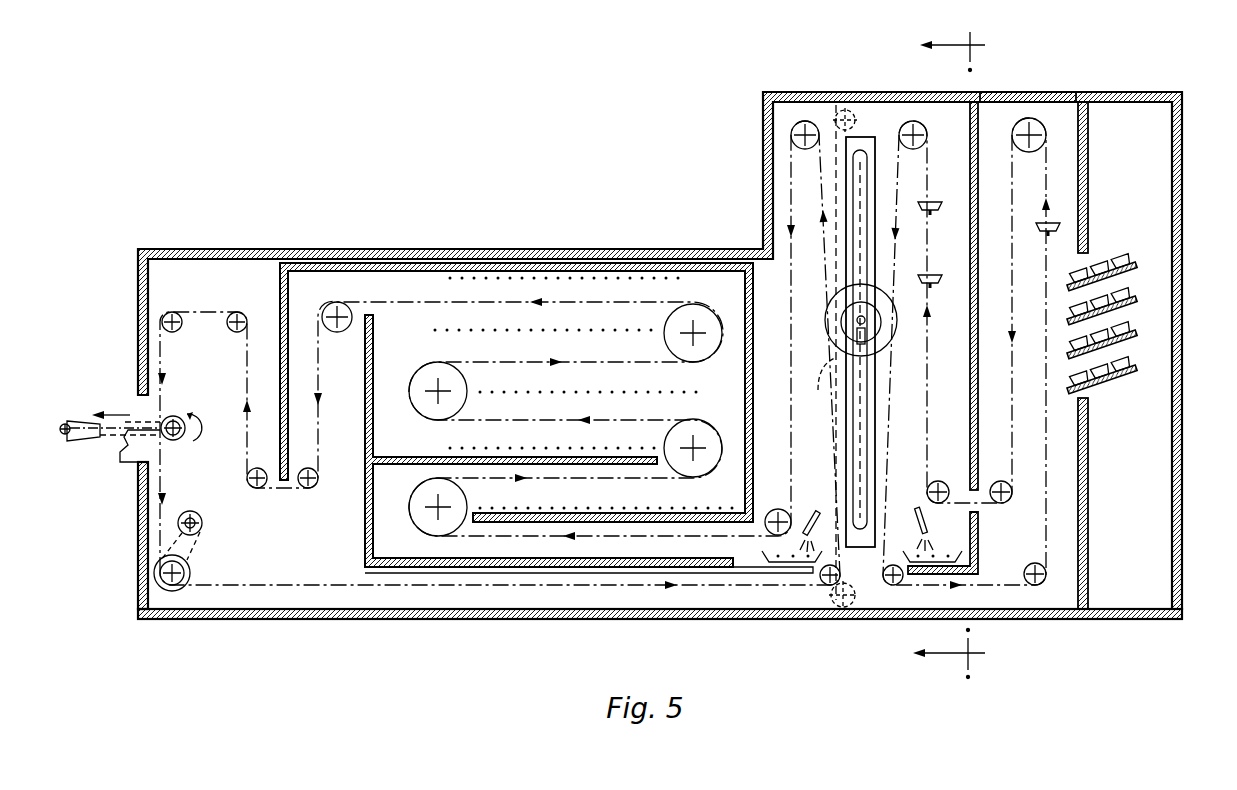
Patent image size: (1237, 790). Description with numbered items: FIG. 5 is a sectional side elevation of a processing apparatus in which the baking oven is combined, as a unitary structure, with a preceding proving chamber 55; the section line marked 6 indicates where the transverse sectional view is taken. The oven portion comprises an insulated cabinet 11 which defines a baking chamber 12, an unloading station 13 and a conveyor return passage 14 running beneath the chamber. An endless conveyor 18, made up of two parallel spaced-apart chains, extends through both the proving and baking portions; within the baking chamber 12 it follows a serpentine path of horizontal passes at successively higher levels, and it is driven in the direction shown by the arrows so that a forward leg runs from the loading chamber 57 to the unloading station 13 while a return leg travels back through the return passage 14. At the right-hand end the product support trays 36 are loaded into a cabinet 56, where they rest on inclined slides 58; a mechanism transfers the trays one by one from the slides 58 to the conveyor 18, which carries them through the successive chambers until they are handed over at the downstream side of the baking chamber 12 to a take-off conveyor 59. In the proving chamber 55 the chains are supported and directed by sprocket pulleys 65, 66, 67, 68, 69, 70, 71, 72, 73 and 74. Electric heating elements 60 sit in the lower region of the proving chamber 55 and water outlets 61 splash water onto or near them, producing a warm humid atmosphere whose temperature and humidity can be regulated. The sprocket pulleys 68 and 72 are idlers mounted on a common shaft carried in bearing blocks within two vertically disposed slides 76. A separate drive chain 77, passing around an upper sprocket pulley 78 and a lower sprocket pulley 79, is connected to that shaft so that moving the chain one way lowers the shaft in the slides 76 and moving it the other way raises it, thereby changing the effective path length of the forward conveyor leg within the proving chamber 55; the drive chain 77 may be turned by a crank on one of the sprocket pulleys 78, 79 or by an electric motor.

The section line 6- 6 is at (955, 354).
The insulated cabinet 11 is at (493, 248).
The baking chamber 12 is at (560, 290).
The unloading station 13 is at (135, 403).
The conveyor return passage 14 is at (588, 596).
The conveyor 18 is at (247, 378).
The product support trays 36 is at (932, 263).
The proving chamber 55 is at (893, 103).
The cabinet 56 is at (1107, 110).
The loading chamber 57 is at (1038, 98).
The inclined slides 58 is at (1140, 308).
The take-off conveyor 59 is at (83, 450).
The electric heating elements 60 is at (762, 552).
The water outlets 61 is at (818, 509).
The sprocket pulley 65 is at (1040, 124).
The sprocket pulley 66 is at (990, 482).
The sprocket pulley 67 is at (928, 134).
The sprocket pulley 68 is at (878, 332).
The sprocket pulley 69 is at (805, 121).
The sprocket pulley 70 is at (775, 509).
The sprocket pulley 71 is at (822, 583).
The sprocket pulley 72 is at (880, 318).
The sprocket pulley 73 is at (890, 586).
The sprocket pulley 74 is at (1040, 586).
The vertically disposed slides 76 is at (850, 243).
The drive chain 77 is at (821, 385).
The upper sprocket pulley 78 is at (845, 102).
The lower sprocket pulley 79 is at (846, 612).